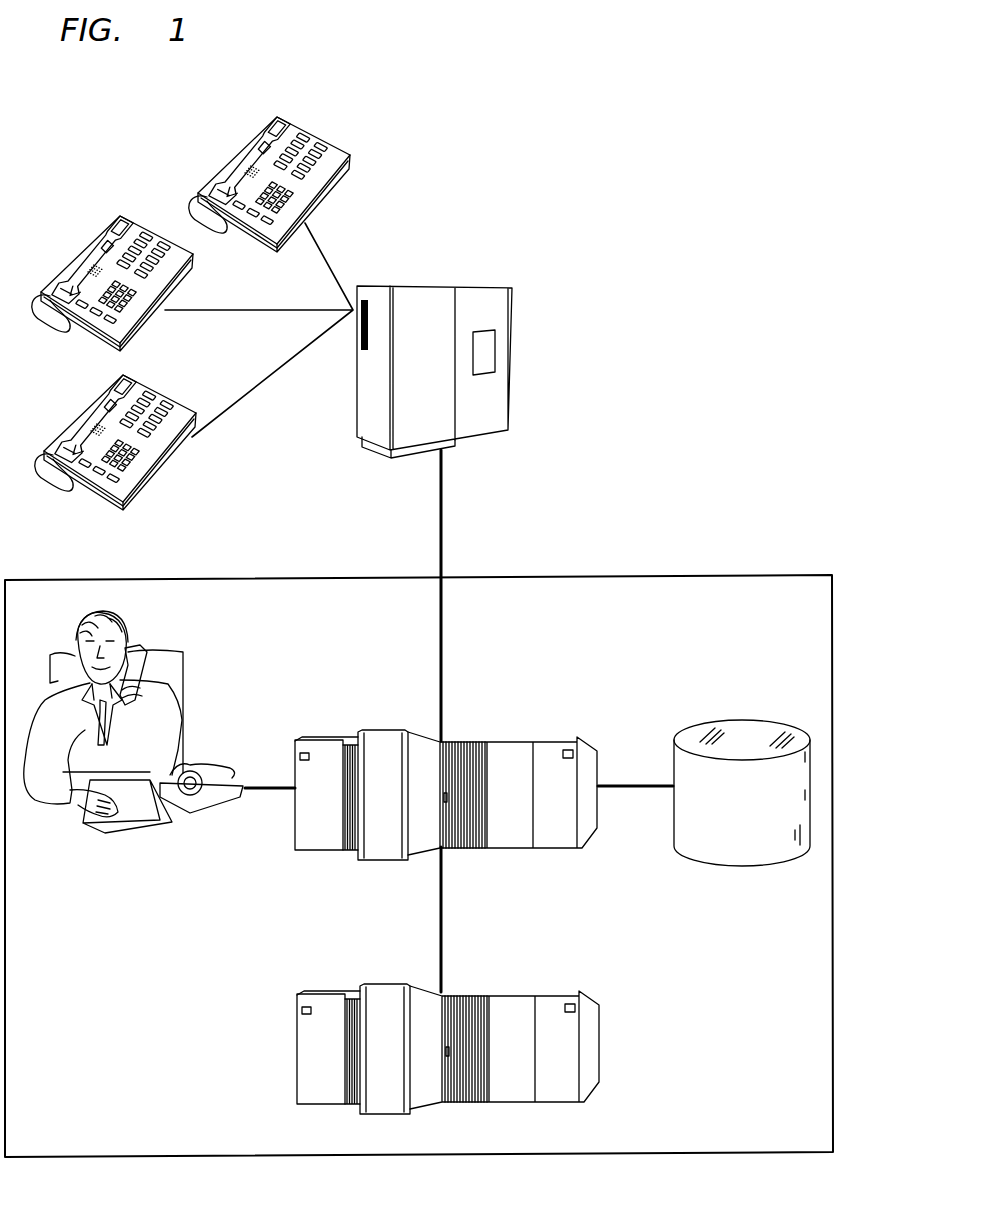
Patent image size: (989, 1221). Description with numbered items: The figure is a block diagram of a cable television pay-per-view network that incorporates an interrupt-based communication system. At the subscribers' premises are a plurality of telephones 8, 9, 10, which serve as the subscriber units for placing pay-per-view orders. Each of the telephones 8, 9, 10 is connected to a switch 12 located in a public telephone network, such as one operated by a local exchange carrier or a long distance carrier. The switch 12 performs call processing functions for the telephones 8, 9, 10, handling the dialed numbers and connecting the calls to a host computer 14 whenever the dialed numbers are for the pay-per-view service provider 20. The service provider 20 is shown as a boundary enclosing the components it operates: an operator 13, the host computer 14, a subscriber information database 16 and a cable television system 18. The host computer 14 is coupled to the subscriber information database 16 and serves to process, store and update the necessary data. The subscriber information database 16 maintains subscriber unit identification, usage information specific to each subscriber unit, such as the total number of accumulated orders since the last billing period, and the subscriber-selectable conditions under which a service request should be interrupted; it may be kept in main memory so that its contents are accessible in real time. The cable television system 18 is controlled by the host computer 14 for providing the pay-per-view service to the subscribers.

The telephone 8 is at (300, 124).
The telephone 9 is at (128, 213).
The telephone 10 is at (78, 413).
The switch 12 is at (458, 285).
The operator 13 is at (167, 697).
The host computer 14 is at (497, 743).
The subscriber information database 16 is at (745, 738).
The cable television system 18 is at (513, 987).
The service provider 20 is at (560, 578).